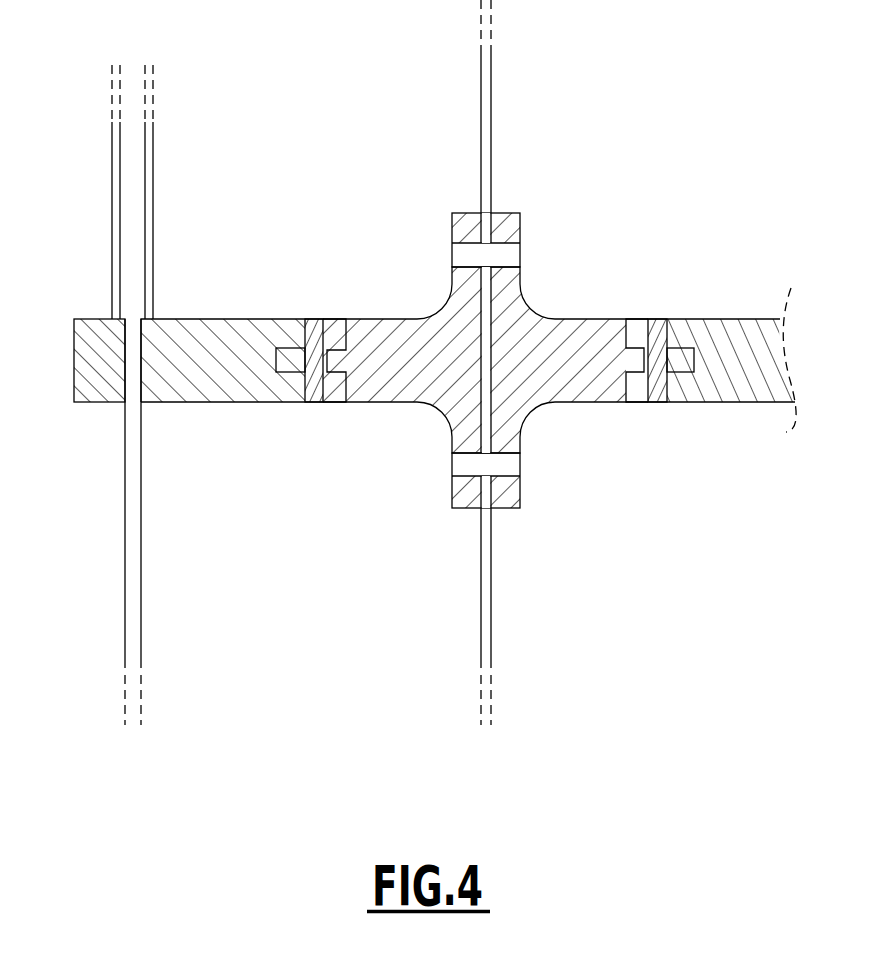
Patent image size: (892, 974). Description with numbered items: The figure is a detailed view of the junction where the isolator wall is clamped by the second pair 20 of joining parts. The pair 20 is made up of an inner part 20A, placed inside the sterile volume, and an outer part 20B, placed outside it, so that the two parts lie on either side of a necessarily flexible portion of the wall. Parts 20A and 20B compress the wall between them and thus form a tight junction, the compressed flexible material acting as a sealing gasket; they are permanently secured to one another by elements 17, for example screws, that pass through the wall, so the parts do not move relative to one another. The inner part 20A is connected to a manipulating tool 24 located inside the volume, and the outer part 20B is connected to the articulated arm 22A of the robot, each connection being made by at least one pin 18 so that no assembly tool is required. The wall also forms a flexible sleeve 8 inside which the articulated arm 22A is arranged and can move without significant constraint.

The sleeve 8 is at (481, 100).
The elements 17 is at (502, 257).
The pin 18 is at (318, 328).
The second pair of joining parts 20 is at (434, 338).
The inner part 20A is at (382, 370).
The outer part 20B is at (565, 342).
The articulated arm 22A is at (725, 319).
The manipulating tool 24 is at (162, 427).